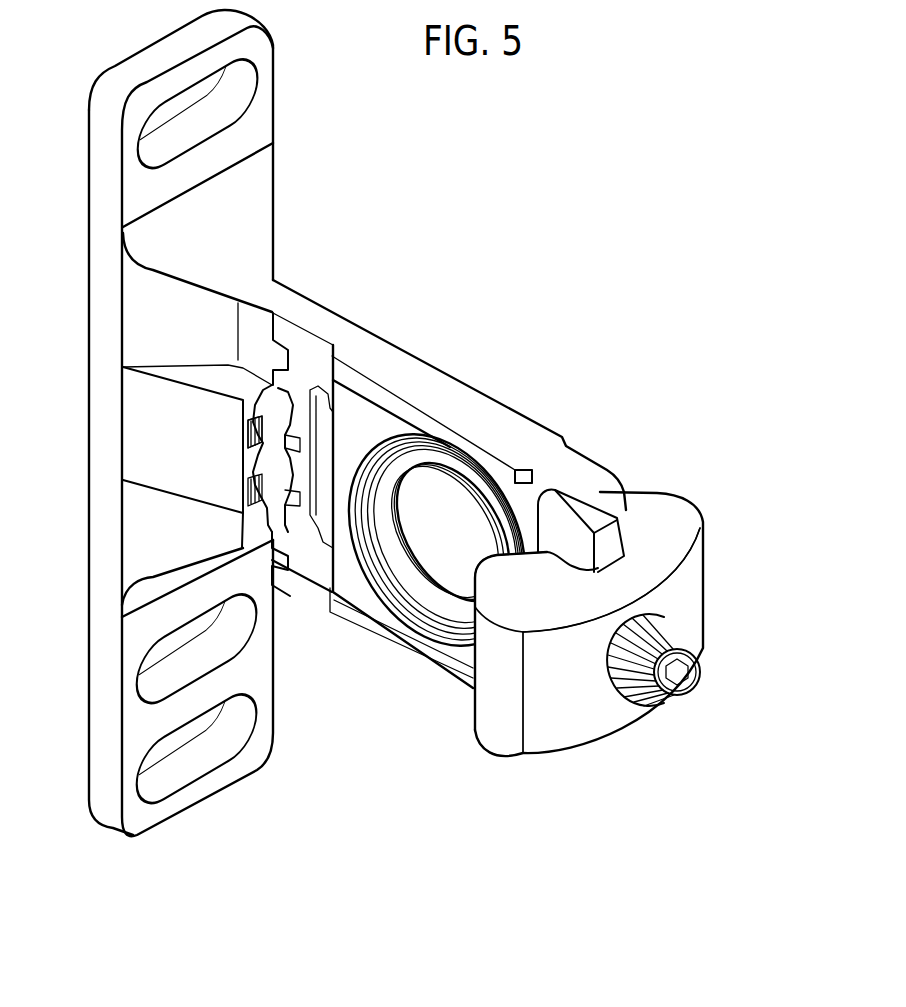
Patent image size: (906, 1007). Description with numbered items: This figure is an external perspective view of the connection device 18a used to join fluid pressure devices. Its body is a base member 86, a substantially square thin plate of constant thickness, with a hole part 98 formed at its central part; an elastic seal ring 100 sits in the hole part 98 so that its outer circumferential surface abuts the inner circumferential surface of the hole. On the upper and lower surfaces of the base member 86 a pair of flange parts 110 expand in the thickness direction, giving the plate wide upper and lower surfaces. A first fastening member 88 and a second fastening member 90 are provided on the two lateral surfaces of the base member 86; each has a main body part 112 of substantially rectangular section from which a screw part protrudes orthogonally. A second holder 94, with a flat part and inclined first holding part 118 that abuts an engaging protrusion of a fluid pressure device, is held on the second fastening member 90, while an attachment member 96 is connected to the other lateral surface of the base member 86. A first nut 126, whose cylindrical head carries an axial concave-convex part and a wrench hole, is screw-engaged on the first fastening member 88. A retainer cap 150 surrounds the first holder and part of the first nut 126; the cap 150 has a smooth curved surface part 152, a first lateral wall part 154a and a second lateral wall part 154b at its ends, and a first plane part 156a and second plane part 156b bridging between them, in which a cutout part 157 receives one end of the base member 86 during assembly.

The connection device 18a is at (503, 327).
The base member 86 is at (445, 390).
The first fastening member 88 is at (572, 530).
The second fastening member 90 is at (323, 417).
The second holder 94 is at (253, 460).
The attachment member 96 is at (100, 466).
The hole part 98 is at (443, 627).
The seal ring 100 is at (423, 600).
The flange part 110 is at (520, 423).
The main body part 112 is at (327, 440).
The first holding part 118 is at (283, 432).
The first nut 126 is at (677, 633).
The retainer cap 150 is at (706, 502).
The curved surface part 152 is at (670, 585).
The first lateral wall part 154a is at (703, 630).
The second lateral wall part 154b is at (490, 666).
The first plane part 156a is at (492, 587).
The second plane part 156b is at (488, 738).
The cutout part 157 is at (577, 558).